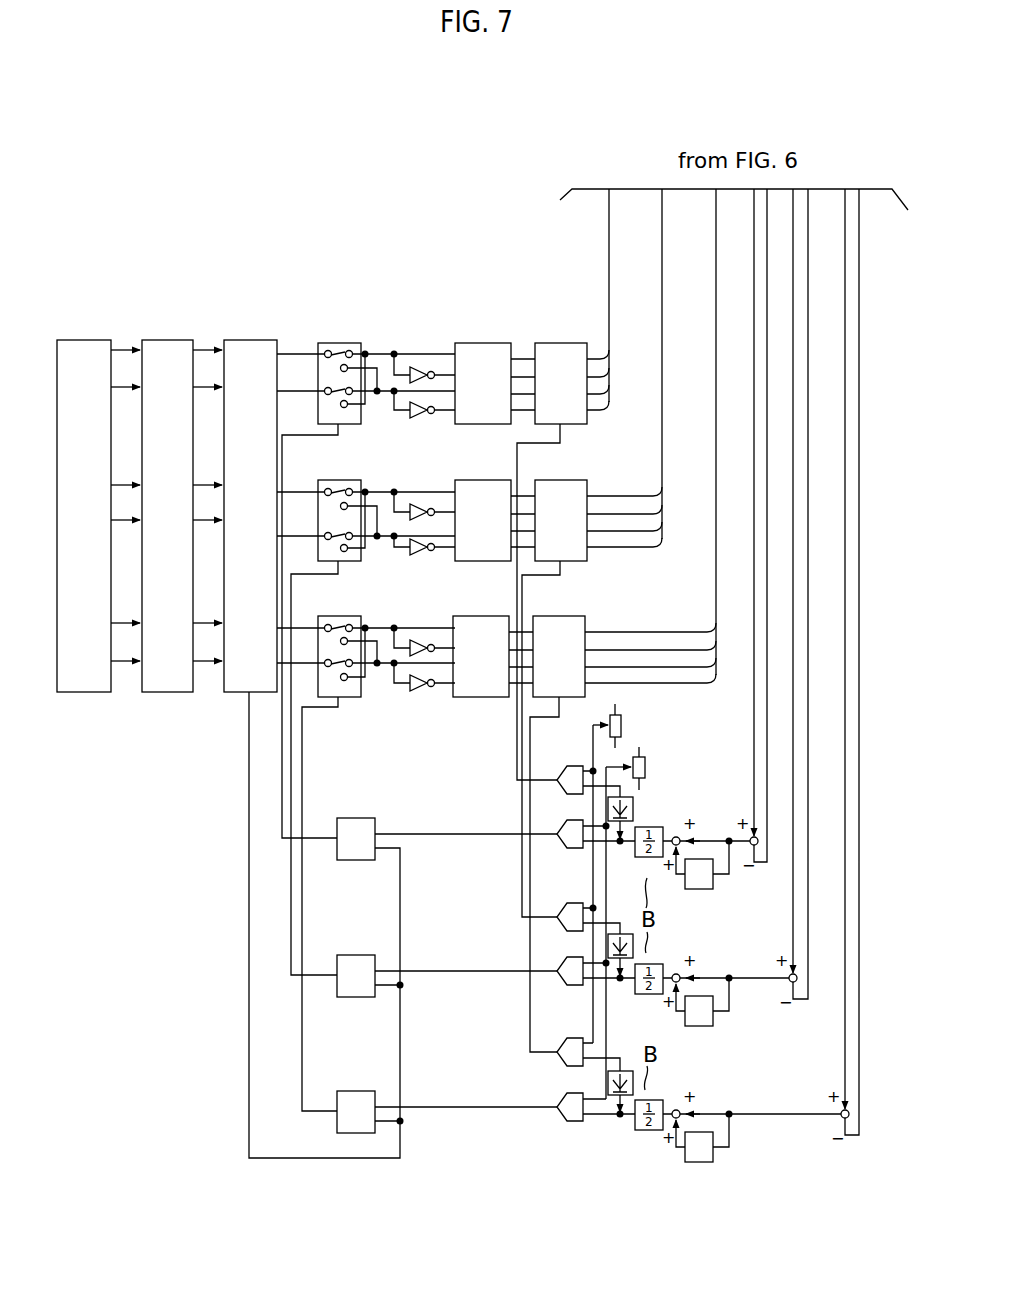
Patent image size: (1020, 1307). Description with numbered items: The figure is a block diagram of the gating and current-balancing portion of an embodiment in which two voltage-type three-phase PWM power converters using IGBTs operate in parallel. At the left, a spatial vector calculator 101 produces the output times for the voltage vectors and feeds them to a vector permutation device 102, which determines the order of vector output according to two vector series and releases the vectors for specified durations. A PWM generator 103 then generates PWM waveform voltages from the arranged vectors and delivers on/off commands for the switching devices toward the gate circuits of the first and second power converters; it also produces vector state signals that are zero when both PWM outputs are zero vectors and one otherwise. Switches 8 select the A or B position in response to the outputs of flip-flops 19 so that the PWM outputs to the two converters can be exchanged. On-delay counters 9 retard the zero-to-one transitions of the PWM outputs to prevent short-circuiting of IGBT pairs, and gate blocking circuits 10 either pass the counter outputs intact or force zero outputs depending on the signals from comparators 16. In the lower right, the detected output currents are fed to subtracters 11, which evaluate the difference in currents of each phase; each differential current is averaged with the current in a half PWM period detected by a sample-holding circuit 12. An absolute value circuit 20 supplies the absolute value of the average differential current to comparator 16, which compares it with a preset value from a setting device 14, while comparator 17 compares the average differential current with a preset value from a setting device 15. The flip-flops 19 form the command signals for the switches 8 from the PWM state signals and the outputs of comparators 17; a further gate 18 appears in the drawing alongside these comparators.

The spatial vector calculator 101 is at (87, 328).
The vector permutation device 102 is at (176, 328).
The PWM generator 103 is at (255, 328).
The switches 8 is at (347, 330).
The on-delay counters 9 is at (490, 330).
The gate blocking circuits 10 is at (564, 330).
The subtracters 11 is at (755, 878).
The sample-holding circuit 12 is at (708, 966).
The setting device 14 is at (625, 722).
The setting device 15 is at (647, 767).
The comparator 16 is at (570, 901).
The comparator 17 is at (570, 890).
The gate 18 is at (569, 1095).
The flip-flops 19 is at (358, 864).
The absolute value circuit 20 is at (637, 811).